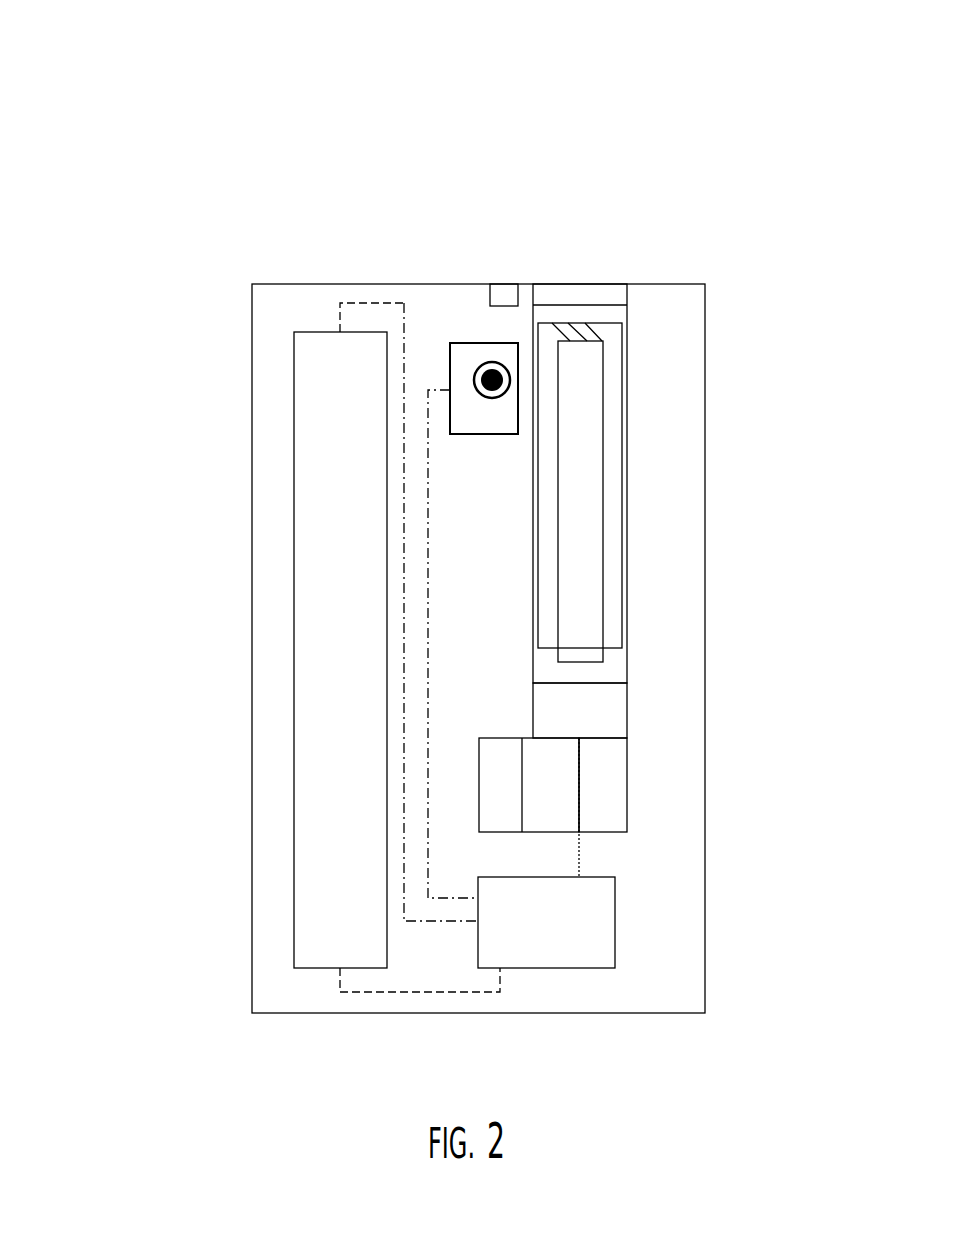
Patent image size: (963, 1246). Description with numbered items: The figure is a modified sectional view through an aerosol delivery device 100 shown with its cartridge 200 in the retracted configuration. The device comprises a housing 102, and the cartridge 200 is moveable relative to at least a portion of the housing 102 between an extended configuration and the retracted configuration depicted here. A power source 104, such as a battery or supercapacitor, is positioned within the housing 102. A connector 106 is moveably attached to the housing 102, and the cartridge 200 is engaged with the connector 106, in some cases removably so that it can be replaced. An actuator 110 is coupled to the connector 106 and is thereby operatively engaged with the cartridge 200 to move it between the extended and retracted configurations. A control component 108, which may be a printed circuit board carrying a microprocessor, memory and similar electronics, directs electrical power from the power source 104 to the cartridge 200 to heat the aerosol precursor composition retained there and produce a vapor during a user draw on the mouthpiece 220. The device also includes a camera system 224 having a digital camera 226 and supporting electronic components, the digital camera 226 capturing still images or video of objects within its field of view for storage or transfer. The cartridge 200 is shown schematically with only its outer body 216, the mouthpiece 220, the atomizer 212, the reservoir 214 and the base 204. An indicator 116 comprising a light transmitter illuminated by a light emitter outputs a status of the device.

The aerosol delivery device 100 is at (151, 103).
The housing 102 is at (244, 887).
The power source 104 is at (293, 728).
The connector 106 is at (627, 800).
The control component 108 is at (572, 968).
The actuator 110 is at (479, 745).
The indicator 116 is at (507, 284).
The cartridge 200 is at (646, 405).
The base 204 is at (627, 720).
The atomizer 212 is at (608, 314).
The reservoir 214 is at (603, 577).
The outer body 216 is at (627, 487).
The mouthpiece 220 is at (578, 284).
The camera system 224 is at (450, 366).
The digital camera 226 is at (492, 362).